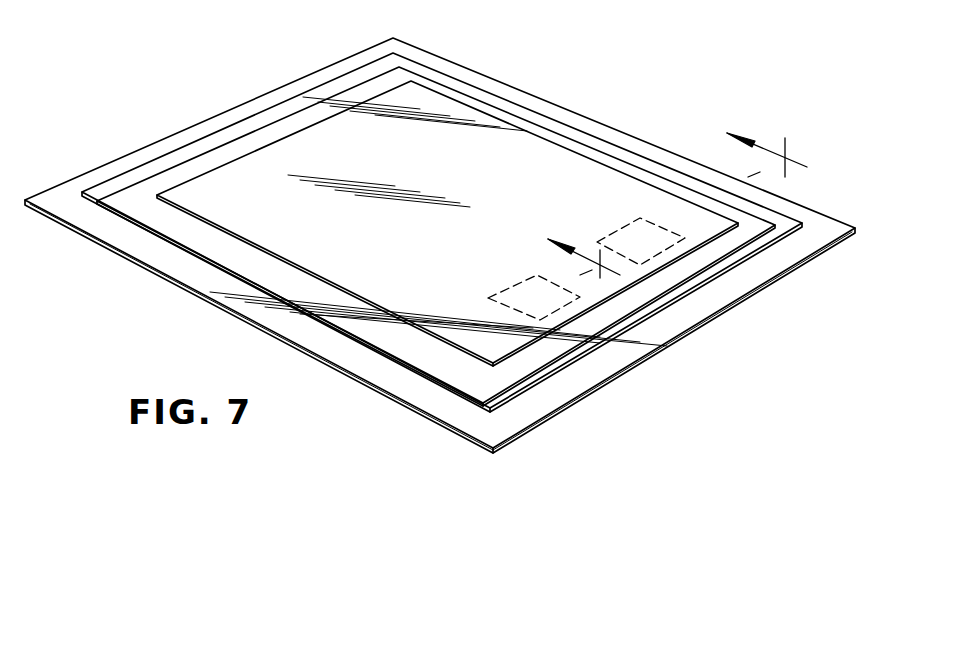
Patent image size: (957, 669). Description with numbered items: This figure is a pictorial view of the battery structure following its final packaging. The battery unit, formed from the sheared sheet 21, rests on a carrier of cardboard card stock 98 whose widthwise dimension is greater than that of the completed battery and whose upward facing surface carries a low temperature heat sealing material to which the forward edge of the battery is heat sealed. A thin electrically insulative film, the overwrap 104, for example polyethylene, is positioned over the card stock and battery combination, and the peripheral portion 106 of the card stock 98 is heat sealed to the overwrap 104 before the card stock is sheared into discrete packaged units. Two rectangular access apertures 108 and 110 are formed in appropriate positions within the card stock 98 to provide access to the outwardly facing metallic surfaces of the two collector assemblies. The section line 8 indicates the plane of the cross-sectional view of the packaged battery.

The section line 8- 8 is at (682, 210).
The sheet 21 is at (298, 143).
The card stock 98 is at (677, 340).
The overwrap 104 is at (551, 142).
The peripheral portion 106 is at (485, 78).
The access aperture 108 is at (517, 280).
The access aperture 110 is at (633, 222).